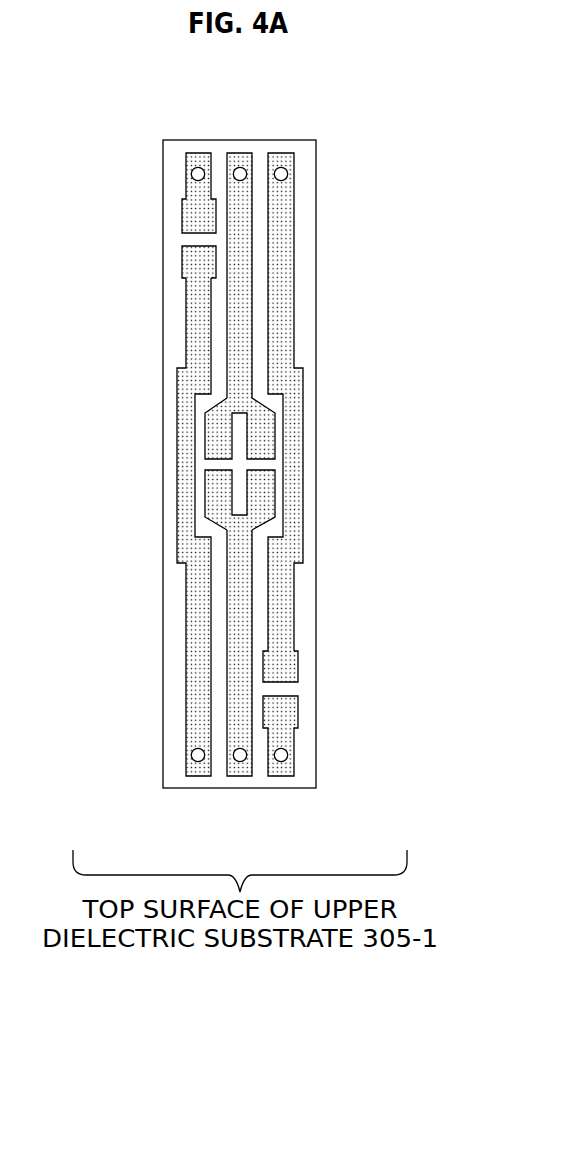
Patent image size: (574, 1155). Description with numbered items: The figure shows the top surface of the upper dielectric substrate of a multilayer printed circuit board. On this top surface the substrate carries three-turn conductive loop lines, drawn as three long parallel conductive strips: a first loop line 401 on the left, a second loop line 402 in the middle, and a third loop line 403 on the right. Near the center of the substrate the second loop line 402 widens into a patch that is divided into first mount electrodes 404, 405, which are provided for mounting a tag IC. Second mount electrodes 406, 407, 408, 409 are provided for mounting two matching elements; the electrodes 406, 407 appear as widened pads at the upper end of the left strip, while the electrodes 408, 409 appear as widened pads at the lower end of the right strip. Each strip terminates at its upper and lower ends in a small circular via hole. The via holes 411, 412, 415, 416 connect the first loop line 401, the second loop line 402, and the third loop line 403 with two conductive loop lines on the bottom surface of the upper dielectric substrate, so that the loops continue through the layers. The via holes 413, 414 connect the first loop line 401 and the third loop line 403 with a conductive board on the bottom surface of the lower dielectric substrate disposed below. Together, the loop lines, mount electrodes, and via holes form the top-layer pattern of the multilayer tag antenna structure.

The first loop line 401 is at (198, 306).
The second loop line 402 is at (240, 352).
The third loop line 403 is at (295, 472).
The first mount electrode 404 is at (215, 436).
The first mount electrode 405 is at (215, 496).
The second mount electrode 406 is at (190, 213).
The second mount electrode 407 is at (190, 262).
The second mount electrode 408 is at (278, 670).
The second mount electrode 409 is at (280, 718).
The via hole 411 is at (198, 167).
The via hole 412 is at (240, 167).
The via hole 413 is at (281, 167).
The via hole 414 is at (198, 762).
The via hole 415 is at (240, 762).
The via hole 416 is at (281, 762).